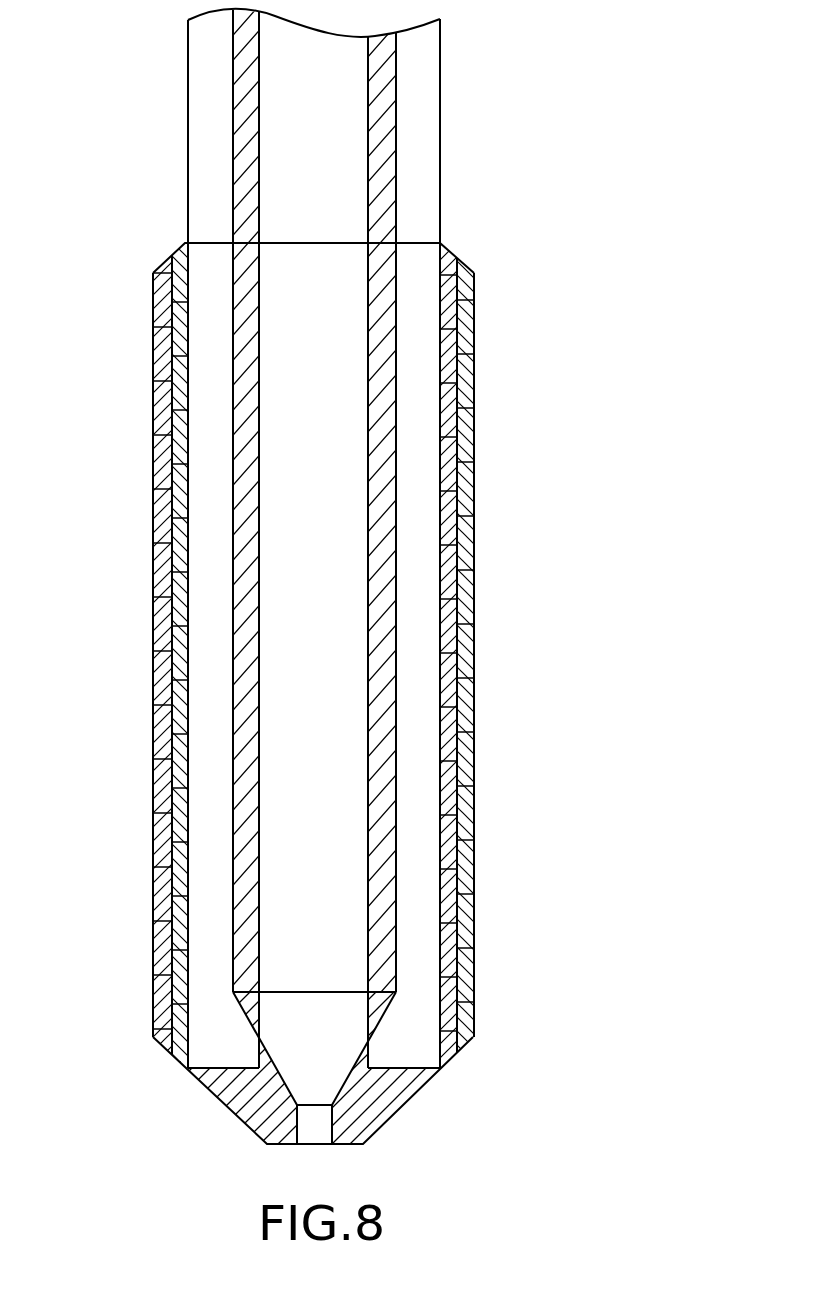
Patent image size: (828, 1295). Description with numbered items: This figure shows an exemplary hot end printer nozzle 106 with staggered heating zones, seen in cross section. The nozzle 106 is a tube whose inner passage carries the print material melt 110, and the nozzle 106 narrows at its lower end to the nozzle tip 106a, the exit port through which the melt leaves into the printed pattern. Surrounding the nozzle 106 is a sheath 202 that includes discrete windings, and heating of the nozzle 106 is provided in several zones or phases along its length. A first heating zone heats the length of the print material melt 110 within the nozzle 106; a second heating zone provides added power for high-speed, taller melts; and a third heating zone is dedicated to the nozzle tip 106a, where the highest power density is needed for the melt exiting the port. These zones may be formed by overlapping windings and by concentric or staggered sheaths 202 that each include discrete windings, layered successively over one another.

The nozzle 106 is at (278, 138).
The nozzle tip 106a is at (233, 1110).
The print material melt 110 is at (292, 883).
The sheath 202 is at (369, 595).